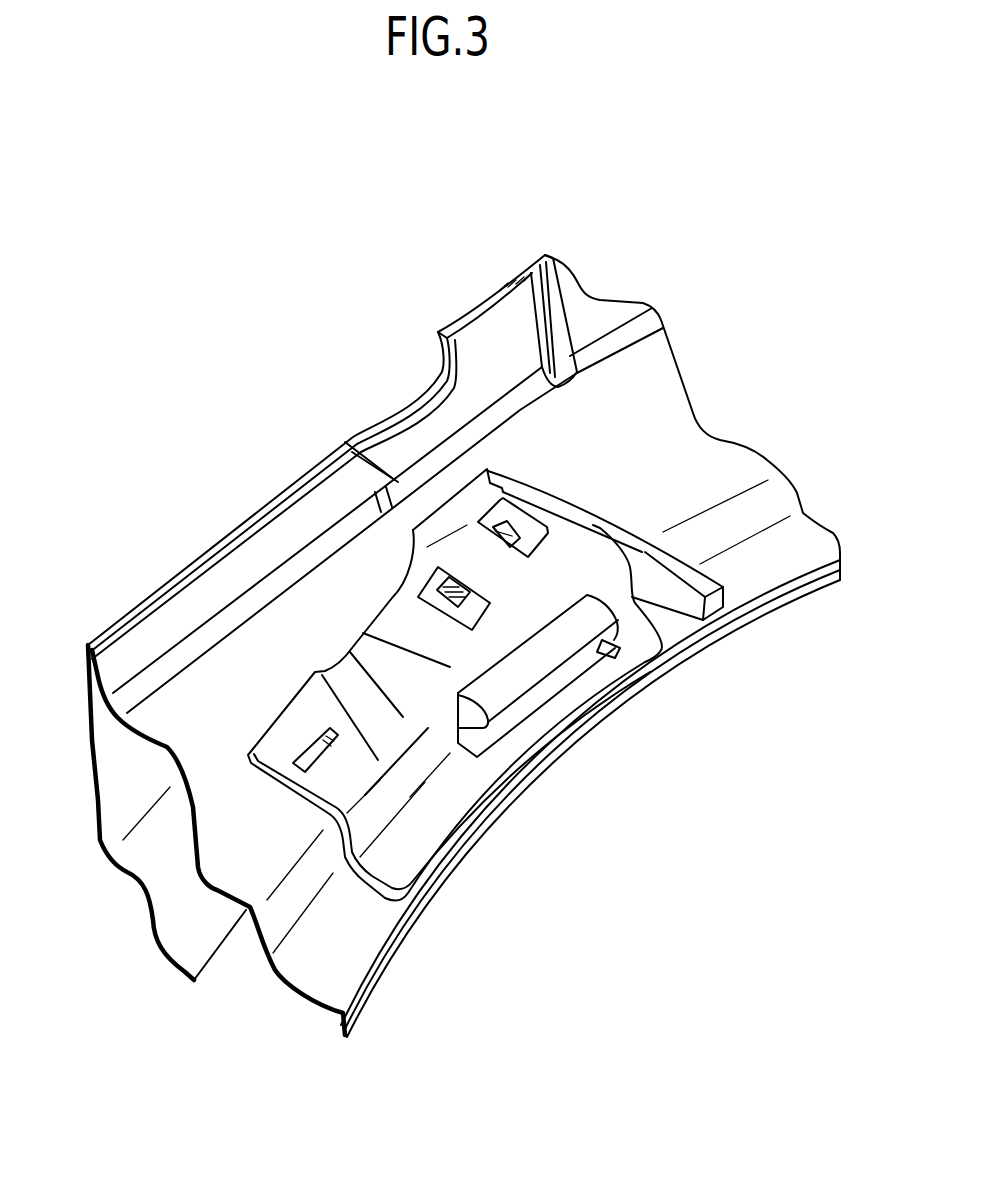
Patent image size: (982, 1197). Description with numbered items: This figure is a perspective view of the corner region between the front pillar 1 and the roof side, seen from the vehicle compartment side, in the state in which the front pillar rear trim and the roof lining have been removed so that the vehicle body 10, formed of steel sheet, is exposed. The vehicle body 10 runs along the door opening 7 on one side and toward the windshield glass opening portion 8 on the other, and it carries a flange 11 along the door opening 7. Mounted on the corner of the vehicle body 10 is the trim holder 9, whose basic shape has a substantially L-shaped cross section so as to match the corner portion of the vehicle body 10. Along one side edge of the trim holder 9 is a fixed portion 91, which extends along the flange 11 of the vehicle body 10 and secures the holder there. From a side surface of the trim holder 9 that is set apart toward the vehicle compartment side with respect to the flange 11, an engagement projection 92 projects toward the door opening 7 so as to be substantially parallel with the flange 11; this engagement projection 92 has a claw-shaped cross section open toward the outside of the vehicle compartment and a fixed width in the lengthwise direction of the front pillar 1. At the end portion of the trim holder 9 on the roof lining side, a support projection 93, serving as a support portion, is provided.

The front pillar 1 is at (141, 508).
The door opening 7 is at (758, 926).
The windshield glass opening portion 8 is at (313, 395).
The trim holder 9 is at (370, 612).
The vehicle body 10 is at (668, 422).
The flange 11 is at (343, 960).
The fixed portion 91 is at (407, 847).
The engagement projection 92 is at (580, 647).
The support projection 93 is at (715, 608).